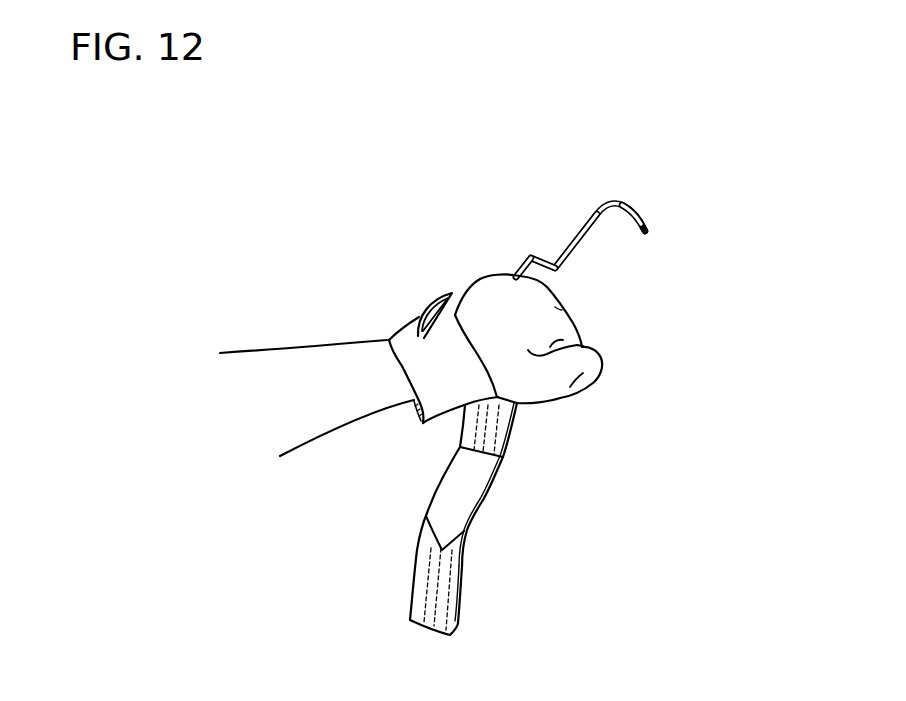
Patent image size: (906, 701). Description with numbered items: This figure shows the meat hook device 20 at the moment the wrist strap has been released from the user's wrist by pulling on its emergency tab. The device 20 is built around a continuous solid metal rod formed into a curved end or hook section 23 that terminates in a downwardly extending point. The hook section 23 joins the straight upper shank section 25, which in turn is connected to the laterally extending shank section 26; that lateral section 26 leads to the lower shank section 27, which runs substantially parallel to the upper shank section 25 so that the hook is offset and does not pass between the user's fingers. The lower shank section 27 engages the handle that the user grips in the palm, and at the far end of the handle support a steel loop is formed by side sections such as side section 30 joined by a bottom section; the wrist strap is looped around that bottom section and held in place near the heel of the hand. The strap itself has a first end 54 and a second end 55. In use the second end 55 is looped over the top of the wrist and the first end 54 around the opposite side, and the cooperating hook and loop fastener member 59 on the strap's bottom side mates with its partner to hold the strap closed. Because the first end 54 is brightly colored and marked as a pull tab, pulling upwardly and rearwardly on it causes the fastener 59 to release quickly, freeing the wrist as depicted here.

The meat hook device 20 is at (543, 191).
The curved end or hook section 23 is at (632, 206).
The upper shank section 25 is at (585, 236).
The laterally extending shank section 26 is at (552, 262).
The lower shank section 27 is at (521, 265).
The second end 55 is at (421, 317).
The side section 30 is at (490, 435).
The hook and loop fastener member 59 is at (463, 498).
The first end 54 is at (444, 598).